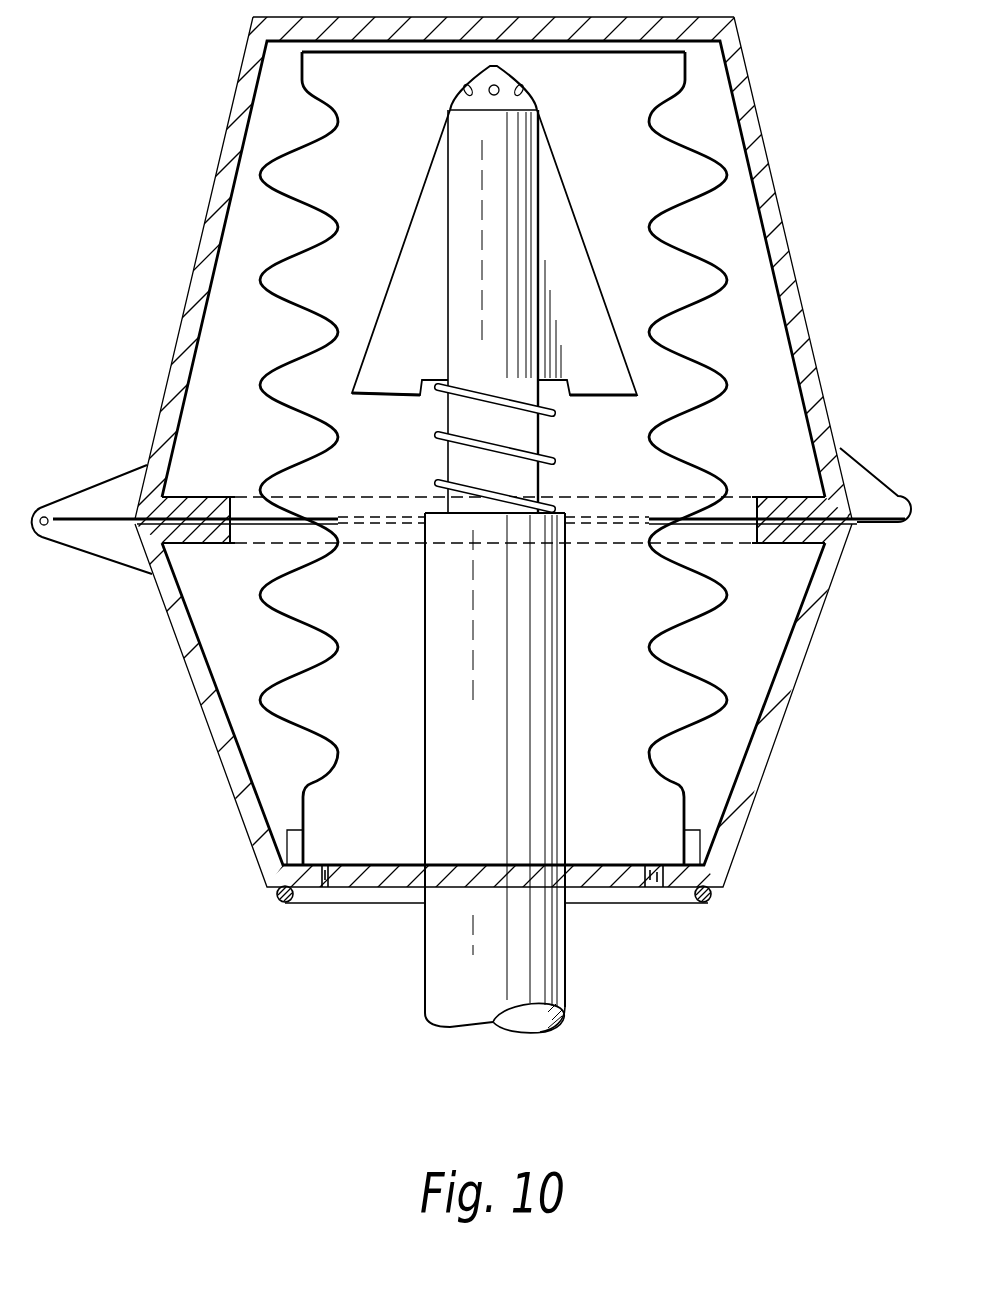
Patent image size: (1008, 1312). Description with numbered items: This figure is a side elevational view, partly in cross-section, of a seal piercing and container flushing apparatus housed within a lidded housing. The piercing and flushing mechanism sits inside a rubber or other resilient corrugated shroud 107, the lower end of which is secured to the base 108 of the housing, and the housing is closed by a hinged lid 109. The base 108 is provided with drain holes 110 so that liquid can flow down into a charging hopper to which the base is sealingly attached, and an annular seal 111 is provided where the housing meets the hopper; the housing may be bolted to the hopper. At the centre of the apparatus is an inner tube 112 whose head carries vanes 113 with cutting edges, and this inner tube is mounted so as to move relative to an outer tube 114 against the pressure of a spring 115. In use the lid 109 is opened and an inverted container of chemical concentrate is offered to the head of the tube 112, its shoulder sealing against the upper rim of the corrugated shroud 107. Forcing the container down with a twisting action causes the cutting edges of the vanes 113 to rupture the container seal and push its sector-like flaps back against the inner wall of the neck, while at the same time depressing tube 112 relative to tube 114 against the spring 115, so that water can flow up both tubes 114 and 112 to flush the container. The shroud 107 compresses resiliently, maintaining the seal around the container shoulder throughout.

The corrugated shroud 107 is at (708, 397).
The base 108 is at (770, 770).
The hinged lid 109 is at (208, 208).
The drain holes 110 is at (338, 878).
The annular seal 111 is at (710, 907).
The tube 112 is at (512, 190).
The vanes 113 is at (422, 283).
The tube 114 is at (457, 667).
The spring 115 is at (535, 445).